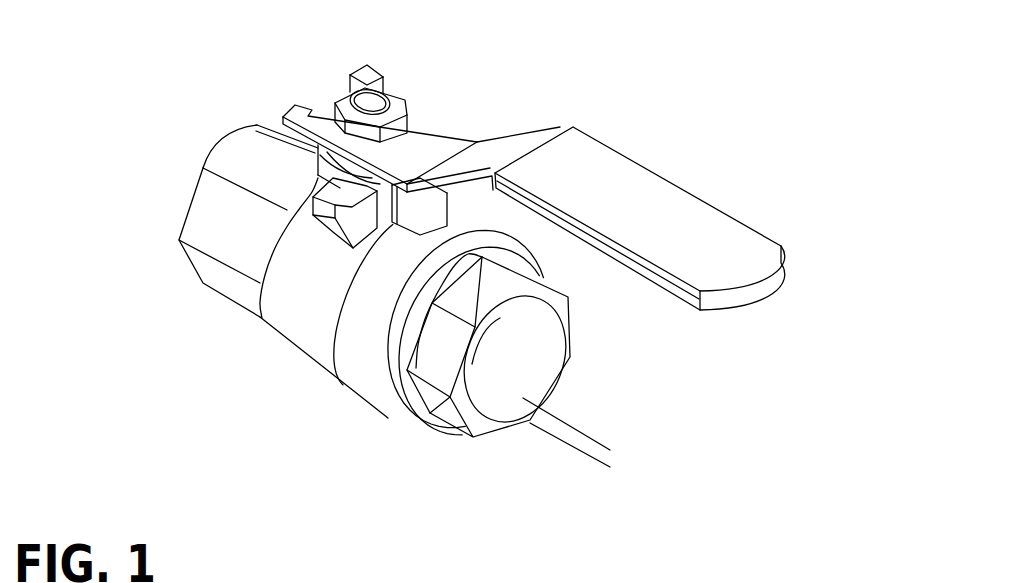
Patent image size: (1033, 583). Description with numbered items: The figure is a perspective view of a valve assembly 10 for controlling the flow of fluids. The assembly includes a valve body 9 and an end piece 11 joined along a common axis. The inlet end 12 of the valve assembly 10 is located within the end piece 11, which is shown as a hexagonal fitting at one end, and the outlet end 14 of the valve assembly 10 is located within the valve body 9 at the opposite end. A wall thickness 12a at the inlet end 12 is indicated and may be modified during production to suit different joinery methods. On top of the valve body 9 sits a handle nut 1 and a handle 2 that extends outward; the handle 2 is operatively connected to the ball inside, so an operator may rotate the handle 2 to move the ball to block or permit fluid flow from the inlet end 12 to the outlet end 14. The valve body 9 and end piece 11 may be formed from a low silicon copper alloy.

The valve assembly 10 is at (553, 66).
The outlet end 14 is at (203, 133).
The valve body 9 is at (282, 317).
The end piece 11 is at (435, 355).
The inlet end 12 is at (517, 363).
The wall thickness 12a is at (595, 393).
The handle nut 1 is at (385, 100).
The handle 2 is at (652, 192).